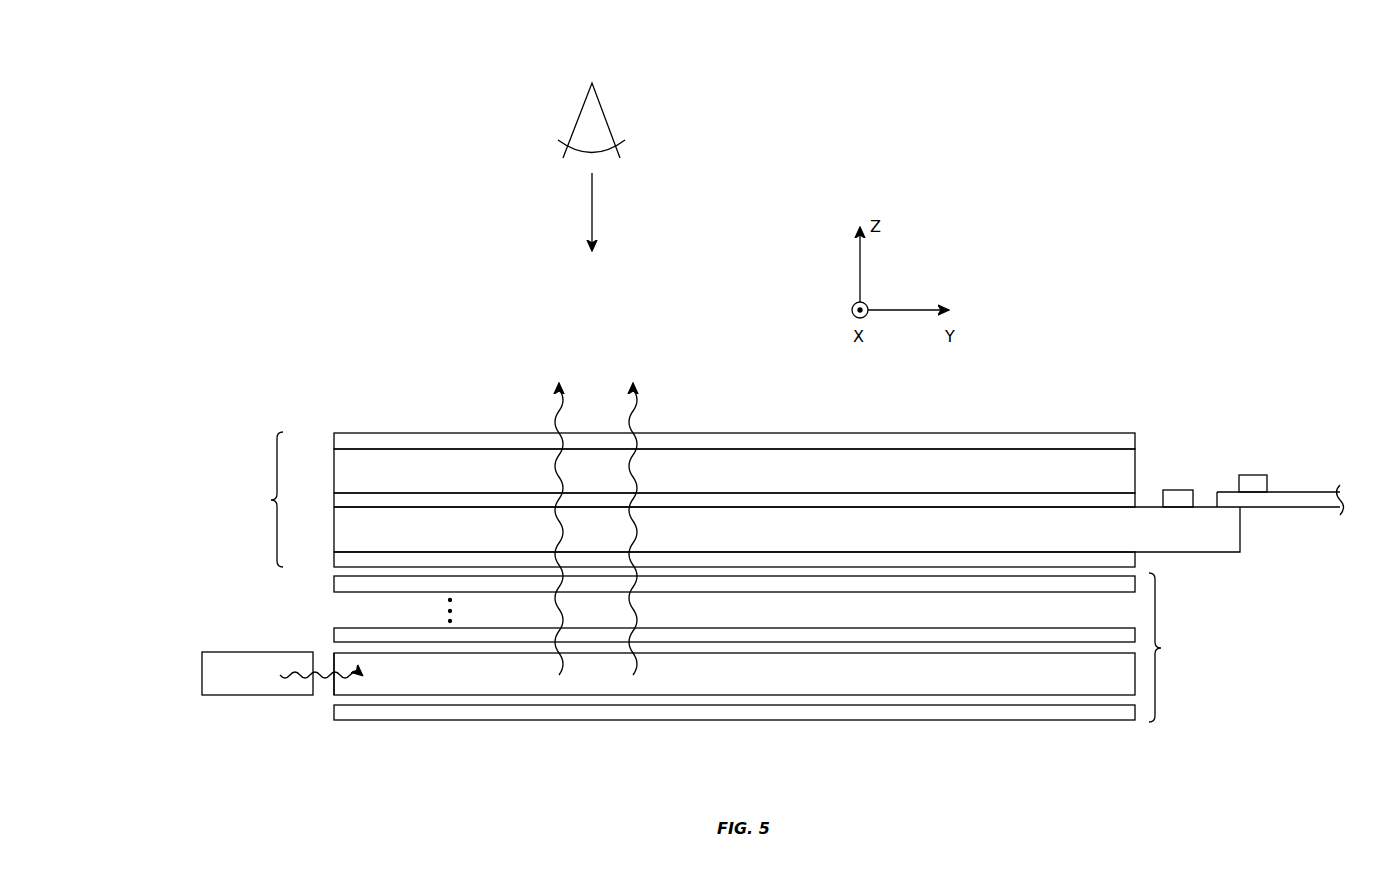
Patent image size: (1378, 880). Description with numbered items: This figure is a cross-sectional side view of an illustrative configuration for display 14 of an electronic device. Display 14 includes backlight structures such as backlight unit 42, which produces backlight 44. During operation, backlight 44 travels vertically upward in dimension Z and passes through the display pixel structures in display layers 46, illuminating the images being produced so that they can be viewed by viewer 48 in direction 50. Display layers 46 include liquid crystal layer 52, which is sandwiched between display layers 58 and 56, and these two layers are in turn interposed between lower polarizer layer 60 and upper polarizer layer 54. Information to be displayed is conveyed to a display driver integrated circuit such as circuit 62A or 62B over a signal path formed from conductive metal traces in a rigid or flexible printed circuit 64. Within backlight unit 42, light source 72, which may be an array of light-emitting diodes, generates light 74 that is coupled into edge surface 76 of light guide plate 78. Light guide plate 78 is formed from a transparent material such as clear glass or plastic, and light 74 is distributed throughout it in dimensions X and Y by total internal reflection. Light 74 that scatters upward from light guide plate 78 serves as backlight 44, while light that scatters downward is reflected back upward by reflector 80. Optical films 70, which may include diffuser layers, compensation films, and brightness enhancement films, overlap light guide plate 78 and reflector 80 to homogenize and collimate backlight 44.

The display 14 is at (1167, 222).
The backlight unit 42 is at (731, 675).
The backlight 44 is at (628, 413).
The display layers 46 is at (742, 490).
The viewer 48 is at (605, 118).
The direction 50 is at (595, 223).
The liquid crystal layer 52 is at (405, 500).
The upper polarizer layer 54 is at (355, 442).
The display layer 56 is at (345, 470).
The display layer 58 is at (345, 522).
The lower polarizer layer 60 is at (340, 565).
The display driver integrated circuit 62A is at (1175, 490).
The display driver integrated circuit 62B is at (1255, 475).
The printed circuit 64 is at (1297, 503).
The optical films 70 is at (340, 632).
The light source 72 is at (212, 676).
The light 74 is at (298, 672).
The edge surface 76 is at (332, 685).
The light guide plate 78 is at (443, 685).
The reflector 80 is at (530, 715).